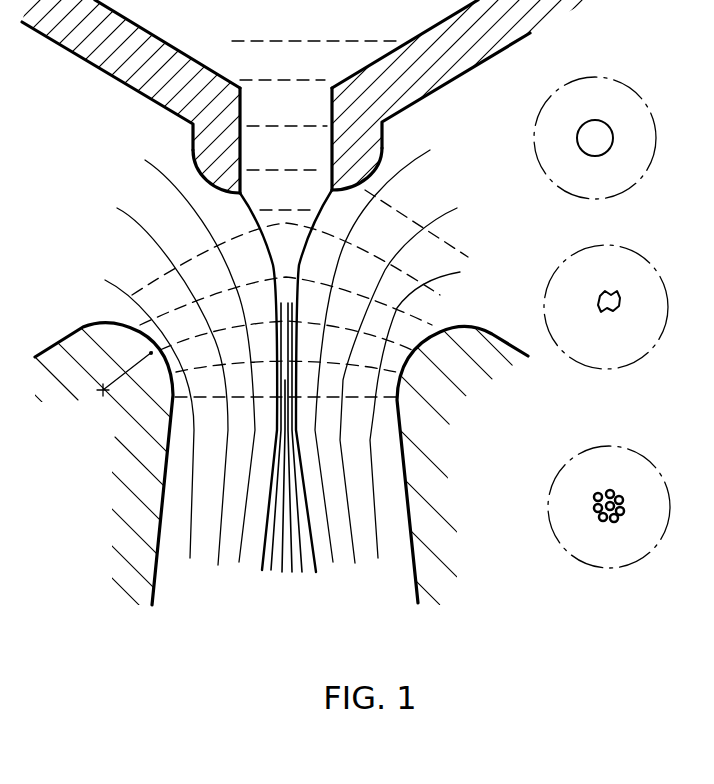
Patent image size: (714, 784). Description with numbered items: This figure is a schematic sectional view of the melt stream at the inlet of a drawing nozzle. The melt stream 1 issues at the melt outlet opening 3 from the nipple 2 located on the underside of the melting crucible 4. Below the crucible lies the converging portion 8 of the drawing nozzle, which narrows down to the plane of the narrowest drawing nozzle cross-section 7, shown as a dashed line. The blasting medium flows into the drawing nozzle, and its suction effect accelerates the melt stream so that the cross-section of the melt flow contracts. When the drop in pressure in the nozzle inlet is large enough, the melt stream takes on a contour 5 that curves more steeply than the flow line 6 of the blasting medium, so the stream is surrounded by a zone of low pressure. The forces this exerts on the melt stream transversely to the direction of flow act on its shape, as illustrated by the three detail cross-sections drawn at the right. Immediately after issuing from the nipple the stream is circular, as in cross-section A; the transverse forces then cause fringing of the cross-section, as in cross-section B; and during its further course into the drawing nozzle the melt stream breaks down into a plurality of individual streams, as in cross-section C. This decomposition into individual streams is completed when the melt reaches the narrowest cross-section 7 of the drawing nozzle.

The melt stream 1 is at (278, 197).
The nipple 2 is at (209, 152).
The melt outlet opening 3 is at (233, 198).
The melting crucible 4 is at (137, 80).
The contour of the melt stream 5 is at (200, 252).
The flow line of the blasting medium 6 is at (340, 258).
The plane of the narrowest drawing nozzle cross-section 7 is at (212, 398).
The converging portion of the drawing nozzle 8 is at (116, 325).
The cross-section A is at (312, 243).
The cross-section B is at (312, 303).
The cross-section C is at (312, 381).